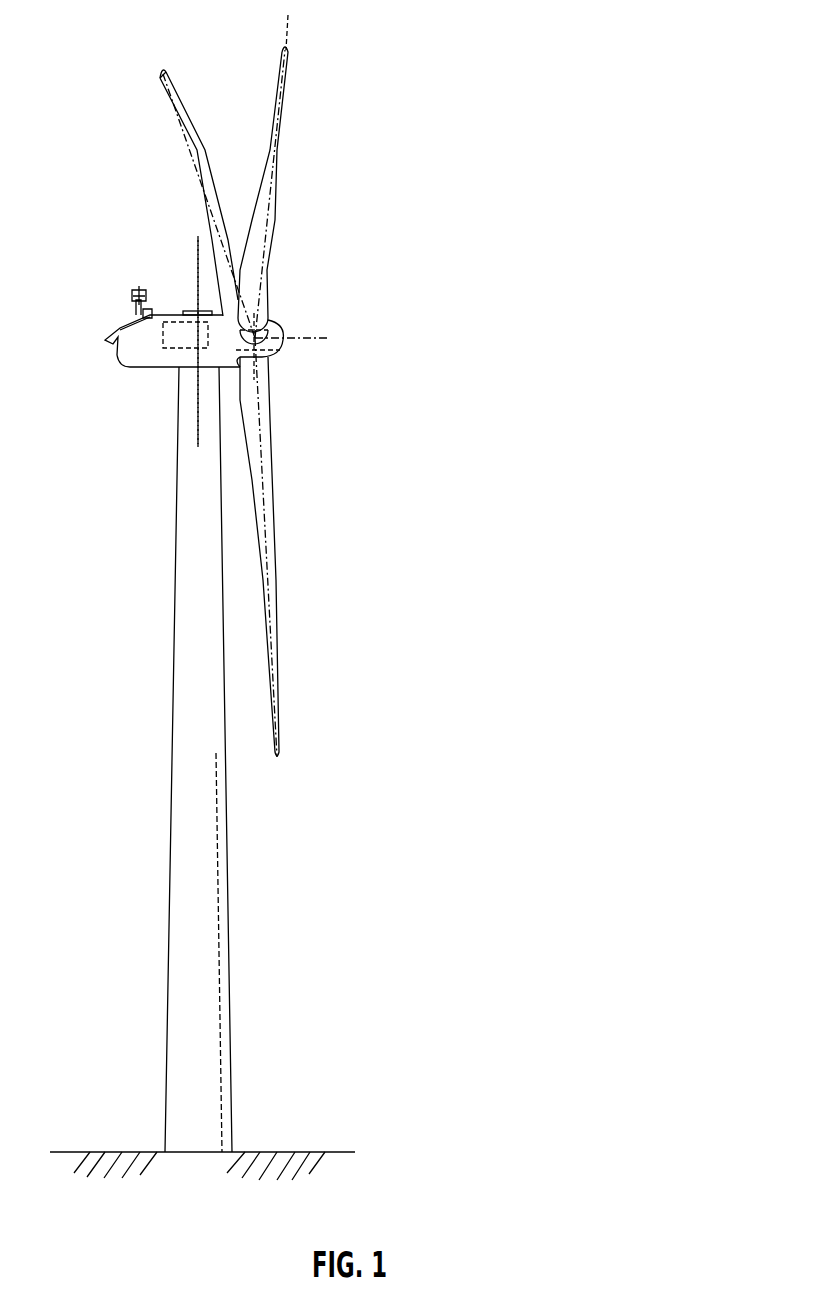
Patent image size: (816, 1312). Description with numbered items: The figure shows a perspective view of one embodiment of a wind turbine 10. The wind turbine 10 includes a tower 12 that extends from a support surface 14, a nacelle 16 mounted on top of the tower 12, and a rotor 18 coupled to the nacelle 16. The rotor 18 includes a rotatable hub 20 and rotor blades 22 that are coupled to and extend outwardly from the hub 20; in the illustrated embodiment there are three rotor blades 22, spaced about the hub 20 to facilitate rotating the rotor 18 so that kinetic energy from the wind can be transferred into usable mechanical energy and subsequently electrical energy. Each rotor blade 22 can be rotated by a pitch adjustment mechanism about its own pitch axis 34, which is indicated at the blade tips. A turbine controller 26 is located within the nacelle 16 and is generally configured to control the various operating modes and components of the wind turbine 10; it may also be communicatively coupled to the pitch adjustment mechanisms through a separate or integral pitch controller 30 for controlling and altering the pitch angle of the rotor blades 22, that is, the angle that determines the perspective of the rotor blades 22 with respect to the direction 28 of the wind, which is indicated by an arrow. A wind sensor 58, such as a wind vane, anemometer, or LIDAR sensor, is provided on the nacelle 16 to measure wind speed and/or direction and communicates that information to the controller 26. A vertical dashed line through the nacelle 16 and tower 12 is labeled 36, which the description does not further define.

The wind turbine 10 is at (407, 124).
The tower 12 is at (171, 826).
The support surface 14 is at (122, 1152).
The nacelle 16 is at (143, 367).
The rotor 18 is at (291, 319).
The rotatable hub 20 is at (280, 349).
The rotor blade 22 is at (206, 182).
The turbine controller 26 is at (190, 311).
The direction of the wind 28 is at (390, 341).
The pitch controller 30 is at (308, 338).
The pitch axis 34 is at (161, 72).
The yaw axis 36 is at (190, 458).
The wind sensor 58 is at (135, 314).